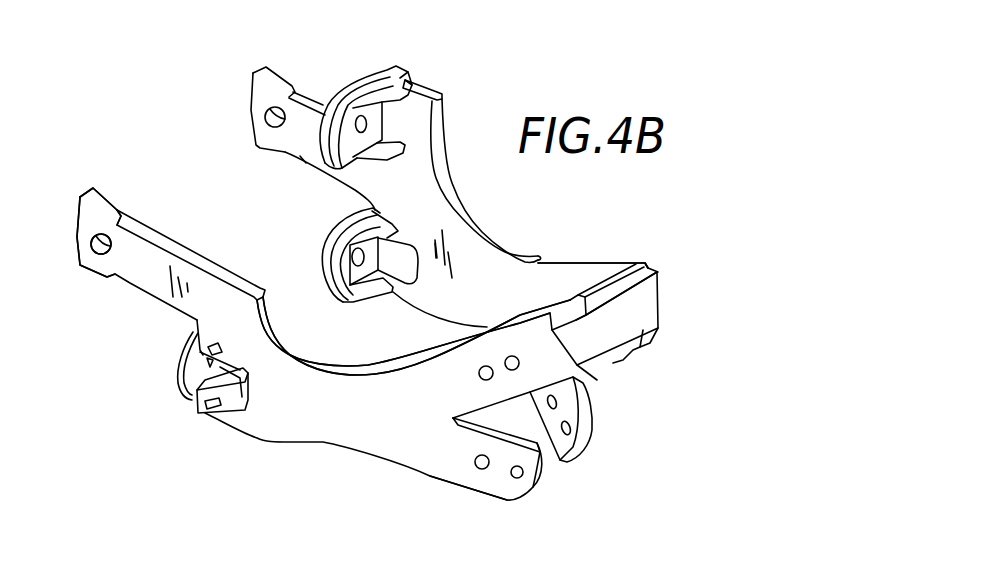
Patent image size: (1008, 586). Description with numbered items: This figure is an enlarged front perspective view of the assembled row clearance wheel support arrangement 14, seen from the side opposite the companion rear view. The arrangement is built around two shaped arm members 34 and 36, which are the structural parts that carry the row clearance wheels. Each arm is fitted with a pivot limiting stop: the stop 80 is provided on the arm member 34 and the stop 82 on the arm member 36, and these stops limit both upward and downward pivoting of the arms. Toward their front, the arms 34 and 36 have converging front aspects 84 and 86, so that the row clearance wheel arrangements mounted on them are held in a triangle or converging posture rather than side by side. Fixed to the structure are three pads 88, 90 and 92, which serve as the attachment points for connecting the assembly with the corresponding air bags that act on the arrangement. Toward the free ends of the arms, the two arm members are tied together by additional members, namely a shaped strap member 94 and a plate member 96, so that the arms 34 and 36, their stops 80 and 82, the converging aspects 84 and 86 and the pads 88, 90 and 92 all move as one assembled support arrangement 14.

The row clearance wheel support arrangement 14 is at (468, 86).
The shaped arm member 34 is at (130, 288).
The shaped arm member 36 is at (300, 159).
The pivot limiting stop 80 is at (77, 265).
The pivot limiting stop 82 is at (253, 147).
The converging front aspect 84 is at (432, 463).
The converging front aspect 86 is at (587, 403).
The pad 88 is at (333, 240).
The pad 90 is at (177, 362).
The pad 92 is at (350, 84).
The shaped strap member 94 is at (651, 307).
The plate member 96 is at (613, 287).